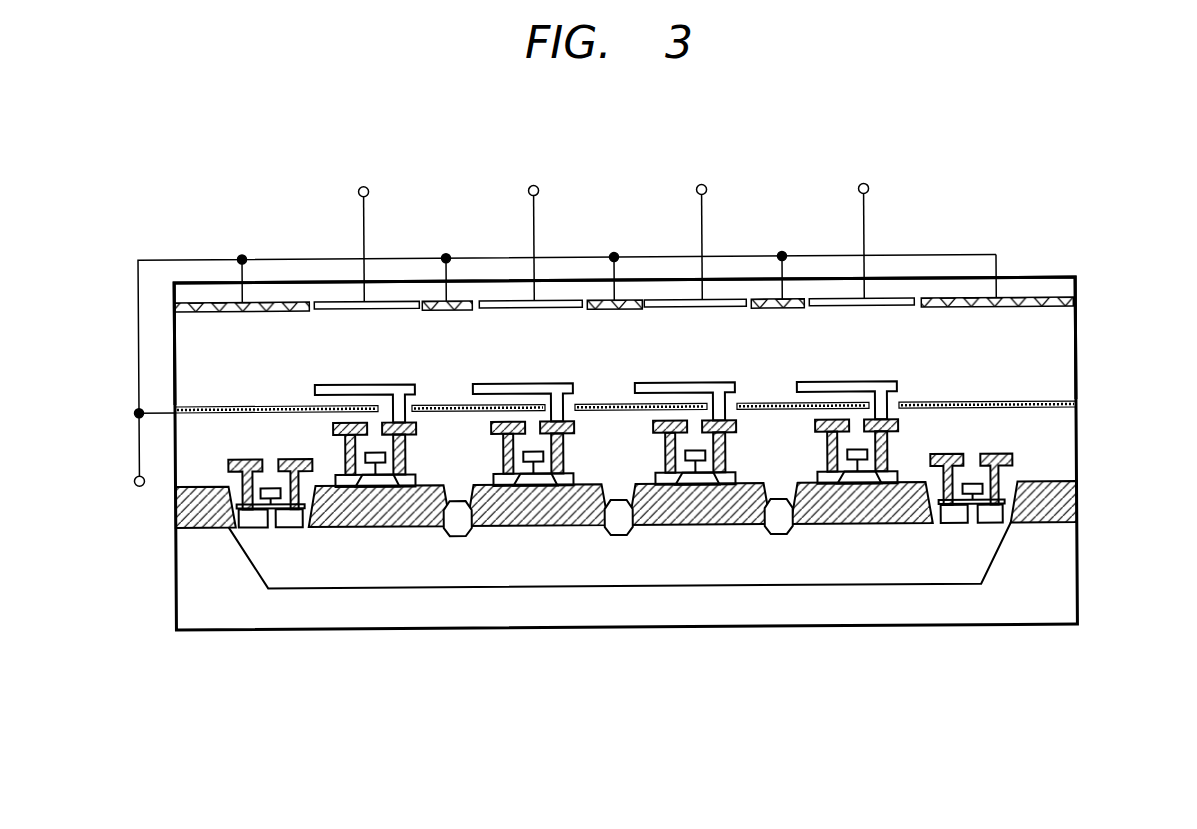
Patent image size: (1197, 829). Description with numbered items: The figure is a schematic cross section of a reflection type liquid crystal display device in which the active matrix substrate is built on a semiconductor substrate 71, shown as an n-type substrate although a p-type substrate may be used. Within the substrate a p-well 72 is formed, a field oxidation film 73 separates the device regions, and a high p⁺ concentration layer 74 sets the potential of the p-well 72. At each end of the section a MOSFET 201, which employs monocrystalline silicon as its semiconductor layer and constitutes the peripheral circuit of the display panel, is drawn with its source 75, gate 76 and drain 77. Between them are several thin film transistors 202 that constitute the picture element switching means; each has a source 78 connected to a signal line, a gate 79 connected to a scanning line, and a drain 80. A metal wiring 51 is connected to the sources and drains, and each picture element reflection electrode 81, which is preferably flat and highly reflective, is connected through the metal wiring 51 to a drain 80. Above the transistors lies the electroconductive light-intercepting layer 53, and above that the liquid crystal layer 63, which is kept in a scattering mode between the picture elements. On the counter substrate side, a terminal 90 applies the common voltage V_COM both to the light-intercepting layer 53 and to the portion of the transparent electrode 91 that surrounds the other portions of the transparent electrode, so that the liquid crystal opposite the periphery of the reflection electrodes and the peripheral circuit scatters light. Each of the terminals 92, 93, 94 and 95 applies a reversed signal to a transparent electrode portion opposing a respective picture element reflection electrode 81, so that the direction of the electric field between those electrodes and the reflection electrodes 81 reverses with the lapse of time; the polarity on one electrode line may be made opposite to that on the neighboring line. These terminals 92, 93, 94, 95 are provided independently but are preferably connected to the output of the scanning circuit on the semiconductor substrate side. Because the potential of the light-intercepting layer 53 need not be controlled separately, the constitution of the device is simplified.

The metal wiring 51 is at (295, 460).
The light-intercepting electroconductive layer 53 is at (175, 409).
The liquid crystal layer in scattering mode 63 is at (1063, 344).
The semiconductor substrate 71 is at (1067, 556).
The p-well 72 is at (922, 589).
The field oxidation film 73 is at (1068, 511).
The high p⁺ concentration layer 74 is at (458, 538).
The source 75 is at (240, 528).
The gate 76 is at (269, 499).
The drain 77 is at (296, 528).
The source 78 is at (340, 528).
The gate 79 is at (372, 528).
The drain 80 is at (403, 528).
The picture element reflection electrode 81 is at (345, 386).
The terminal 90 is at (134, 530).
The transparent electrode 91 is at (292, 300).
The terminal 92 is at (385, 157).
The terminal 93 is at (555, 157).
The terminal 94 is at (722, 157).
The terminal 95 is at (882, 157).
The MOSFET 201 is at (287, 717).
The thin film transistor 202 is at (430, 690).